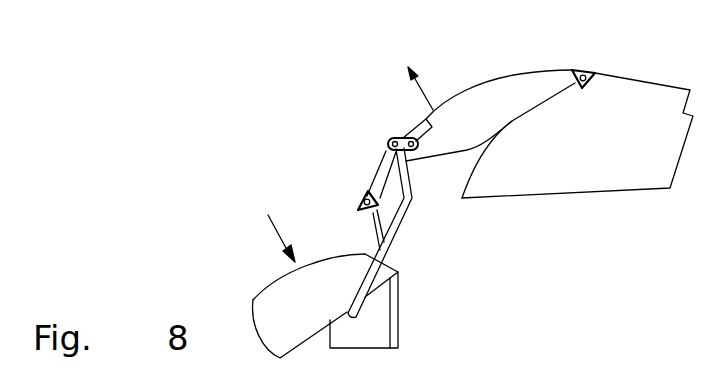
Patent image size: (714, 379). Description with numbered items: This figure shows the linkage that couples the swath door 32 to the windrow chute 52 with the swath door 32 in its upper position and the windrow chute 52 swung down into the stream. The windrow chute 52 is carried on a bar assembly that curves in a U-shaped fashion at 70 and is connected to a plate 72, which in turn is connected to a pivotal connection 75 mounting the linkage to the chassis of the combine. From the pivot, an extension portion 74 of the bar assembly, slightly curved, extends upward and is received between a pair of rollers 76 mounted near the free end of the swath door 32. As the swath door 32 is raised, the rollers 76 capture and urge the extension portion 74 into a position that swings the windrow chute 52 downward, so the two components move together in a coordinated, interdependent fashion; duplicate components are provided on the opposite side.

The swath door 32 is at (473, 88).
The windrow chute 52 is at (268, 274).
The U-shaped curve of the bar assembly 70 is at (397, 232).
The plate 72 is at (378, 222).
The extension portion 74 is at (408, 200).
The pivotal connection 75 is at (360, 197).
The rollers 76 is at (393, 138).